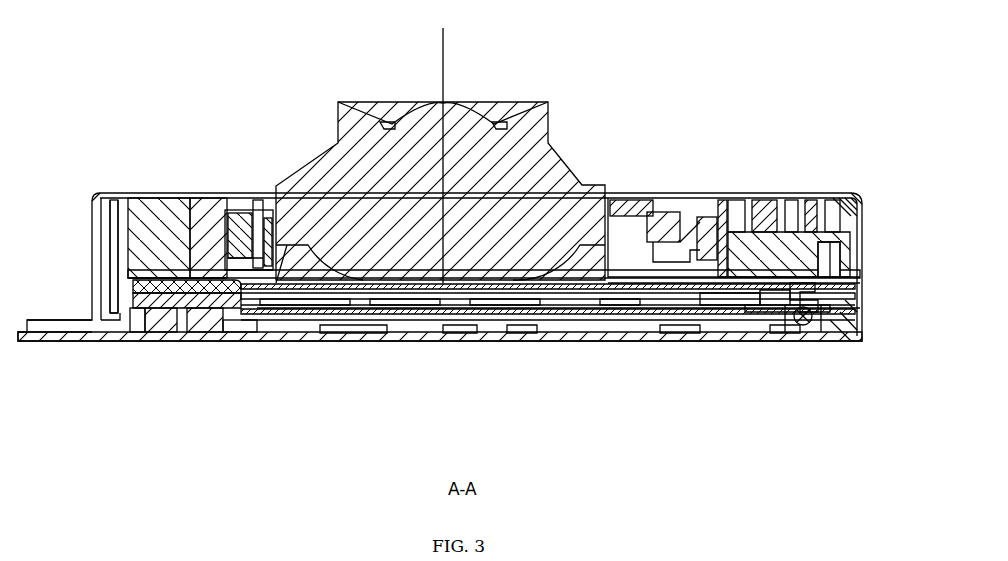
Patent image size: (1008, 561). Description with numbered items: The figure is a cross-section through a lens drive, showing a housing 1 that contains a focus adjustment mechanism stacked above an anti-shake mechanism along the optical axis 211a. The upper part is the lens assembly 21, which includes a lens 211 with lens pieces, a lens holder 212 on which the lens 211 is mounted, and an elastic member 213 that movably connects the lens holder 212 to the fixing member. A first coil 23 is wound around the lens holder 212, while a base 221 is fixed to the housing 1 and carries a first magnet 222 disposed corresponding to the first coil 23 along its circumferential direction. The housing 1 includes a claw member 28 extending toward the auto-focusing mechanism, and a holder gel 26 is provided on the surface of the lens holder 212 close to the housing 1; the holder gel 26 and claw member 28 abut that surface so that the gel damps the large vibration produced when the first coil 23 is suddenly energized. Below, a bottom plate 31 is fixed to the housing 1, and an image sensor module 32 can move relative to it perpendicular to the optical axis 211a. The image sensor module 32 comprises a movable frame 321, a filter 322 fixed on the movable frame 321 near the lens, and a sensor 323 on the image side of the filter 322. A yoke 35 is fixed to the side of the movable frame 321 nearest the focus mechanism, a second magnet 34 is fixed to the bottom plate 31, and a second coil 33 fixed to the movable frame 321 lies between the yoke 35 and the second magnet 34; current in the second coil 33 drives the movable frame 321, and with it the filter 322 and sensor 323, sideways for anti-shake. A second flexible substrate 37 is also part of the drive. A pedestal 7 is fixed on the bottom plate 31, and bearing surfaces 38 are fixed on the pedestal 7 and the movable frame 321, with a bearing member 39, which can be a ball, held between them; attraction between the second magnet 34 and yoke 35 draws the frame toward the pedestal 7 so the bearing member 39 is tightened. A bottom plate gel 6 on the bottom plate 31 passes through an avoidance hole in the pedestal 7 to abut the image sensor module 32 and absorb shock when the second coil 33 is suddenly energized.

The housing 1 is at (93, 197).
The lens assembly 21 is at (209, 197).
The lens 211 is at (398, 155).
The optical axis 211a is at (445, 94).
The lens holder 212 is at (260, 214).
The elastic member 213 is at (273, 206).
The base 221 is at (847, 217).
The first magnet 222 is at (200, 210).
The first coil 23 is at (710, 234).
The holder gel 26 is at (667, 224).
The claw member 28 is at (651, 218).
The bottom plate 31 is at (743, 338).
The image sensor module 32 is at (548, 346).
The movable frame 321 is at (627, 293).
The filter 322 is at (603, 290).
The sensor 323 is at (573, 293).
The second coil 33 is at (143, 313).
The second magnet 34 is at (167, 330).
The yoke 35 is at (197, 282).
The second flexible substrate 37 is at (113, 270).
The bearing surface 38 is at (812, 298).
The bearing member 39 is at (802, 329).
The bottom plate gel 6 is at (292, 326).
The pedestal 7 is at (852, 335).